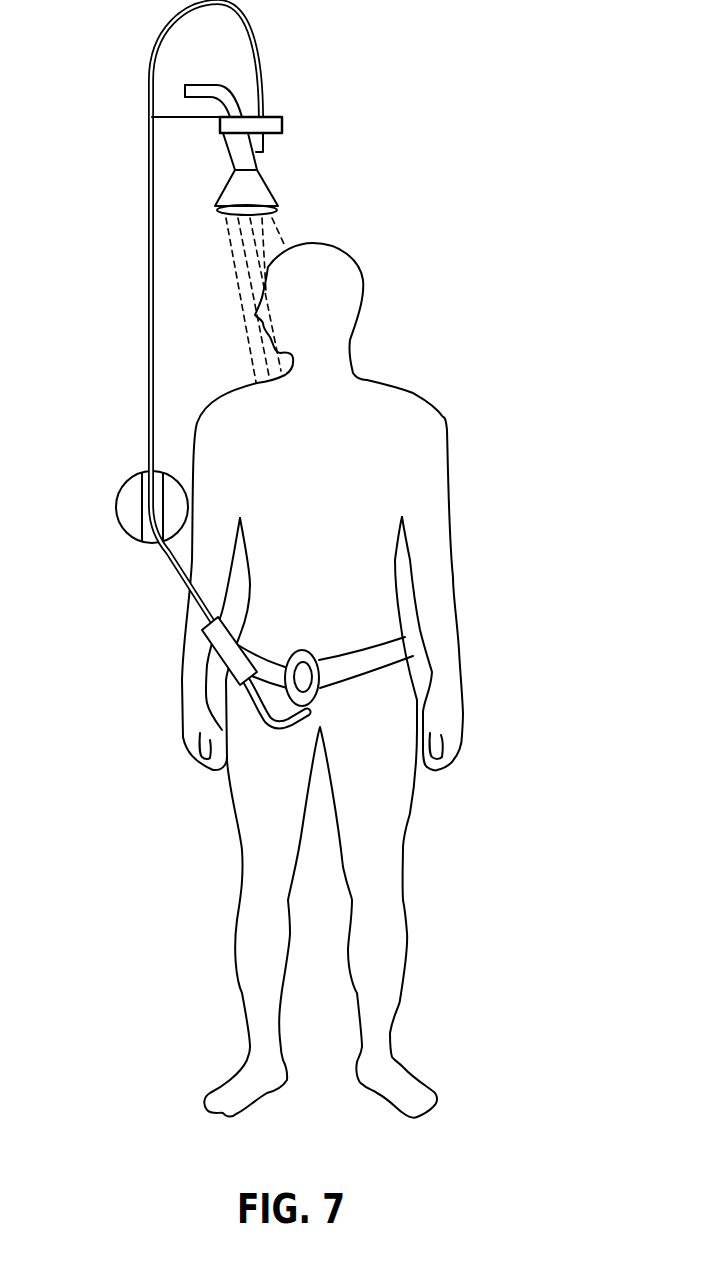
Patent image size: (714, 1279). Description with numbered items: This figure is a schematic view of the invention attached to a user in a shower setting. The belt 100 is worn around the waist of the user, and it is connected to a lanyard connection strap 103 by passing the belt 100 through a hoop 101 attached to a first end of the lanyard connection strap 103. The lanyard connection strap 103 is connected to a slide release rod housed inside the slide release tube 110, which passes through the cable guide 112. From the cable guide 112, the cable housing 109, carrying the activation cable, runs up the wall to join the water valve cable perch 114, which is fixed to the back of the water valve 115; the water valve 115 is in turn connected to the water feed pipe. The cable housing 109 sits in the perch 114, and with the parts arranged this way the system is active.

The belt 100 is at (383, 680).
The hoop 101 is at (320, 653).
The lanyard connection strap 103 is at (263, 720).
The cable housing 109 is at (141, 343).
The slide release tube 110 is at (209, 650).
The cable guide 112 is at (110, 498).
The water valve cable perch 114 is at (198, 128).
The water valve 115 is at (225, 150).